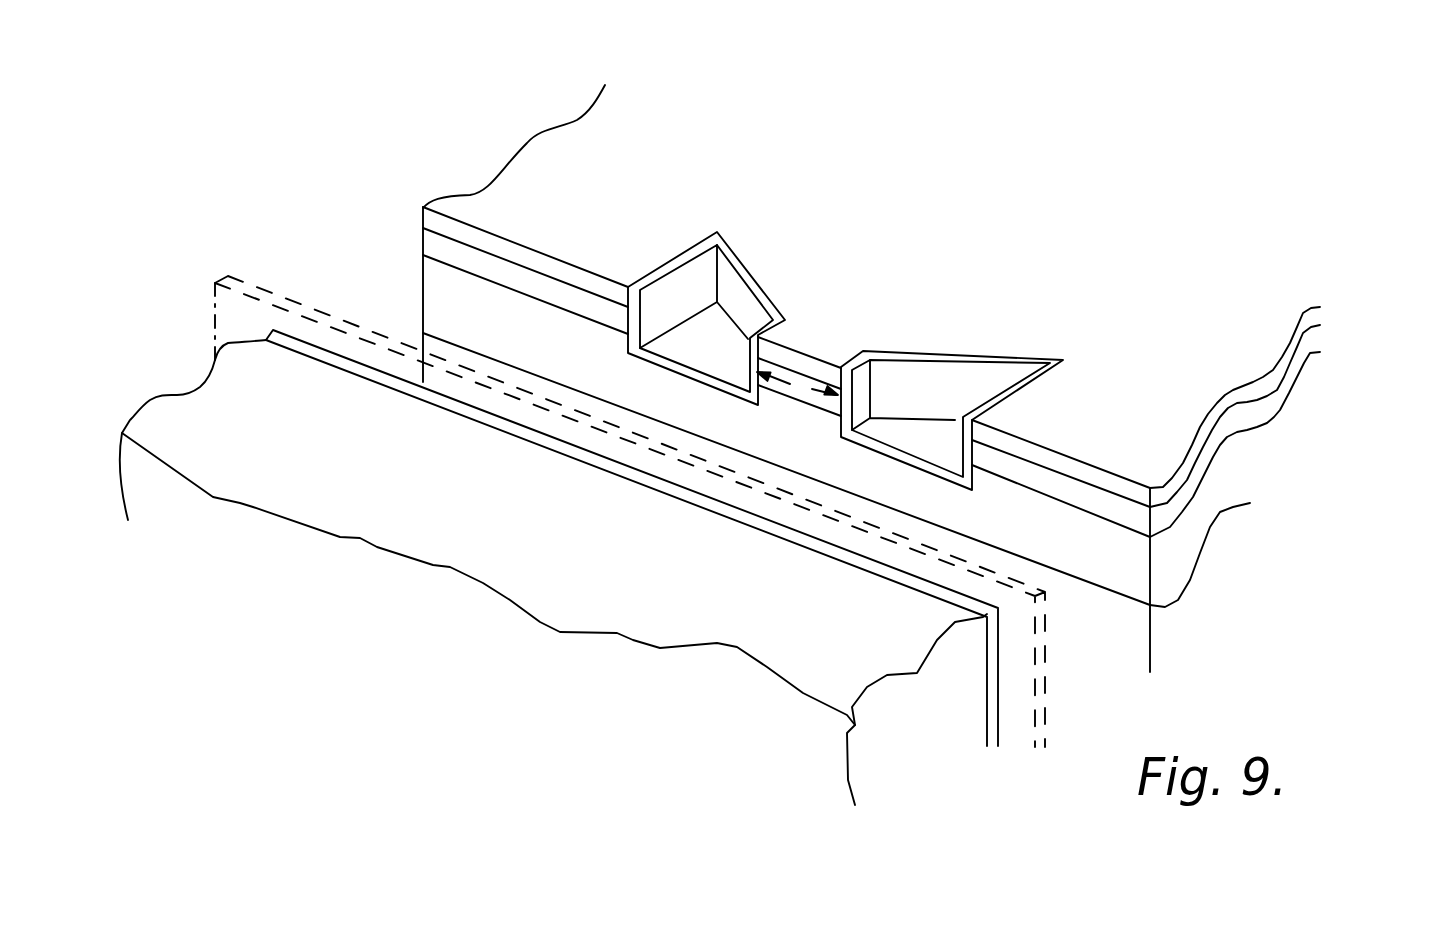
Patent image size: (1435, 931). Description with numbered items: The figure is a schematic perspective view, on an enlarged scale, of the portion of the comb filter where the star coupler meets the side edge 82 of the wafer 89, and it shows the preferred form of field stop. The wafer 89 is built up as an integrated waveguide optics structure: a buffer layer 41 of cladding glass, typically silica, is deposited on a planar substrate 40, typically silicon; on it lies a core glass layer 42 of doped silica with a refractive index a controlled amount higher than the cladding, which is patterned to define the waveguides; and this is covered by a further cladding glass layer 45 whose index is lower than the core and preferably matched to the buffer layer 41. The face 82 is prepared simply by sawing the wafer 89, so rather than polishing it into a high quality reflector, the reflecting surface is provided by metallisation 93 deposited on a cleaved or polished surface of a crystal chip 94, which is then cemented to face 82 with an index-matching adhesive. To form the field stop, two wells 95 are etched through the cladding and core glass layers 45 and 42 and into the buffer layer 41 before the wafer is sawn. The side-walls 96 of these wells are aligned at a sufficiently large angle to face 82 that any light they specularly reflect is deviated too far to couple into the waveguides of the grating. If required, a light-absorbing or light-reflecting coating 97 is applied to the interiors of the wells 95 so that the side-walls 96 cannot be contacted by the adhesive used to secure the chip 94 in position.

The substrate 40 is at (1217, 600).
The buffer layer 41 is at (1222, 505).
The core glass layer 42 is at (1225, 428).
The cladding glass layer 45 is at (1227, 400).
The side edge 82 is at (477, 300).
The wafer 89 is at (543, 190).
The metallisation 93 is at (296, 346).
The crystal chip 94 is at (232, 390).
The wells 95 is at (715, 353).
The side-walls 96 is at (745, 268).
The coating 97 is at (716, 232).